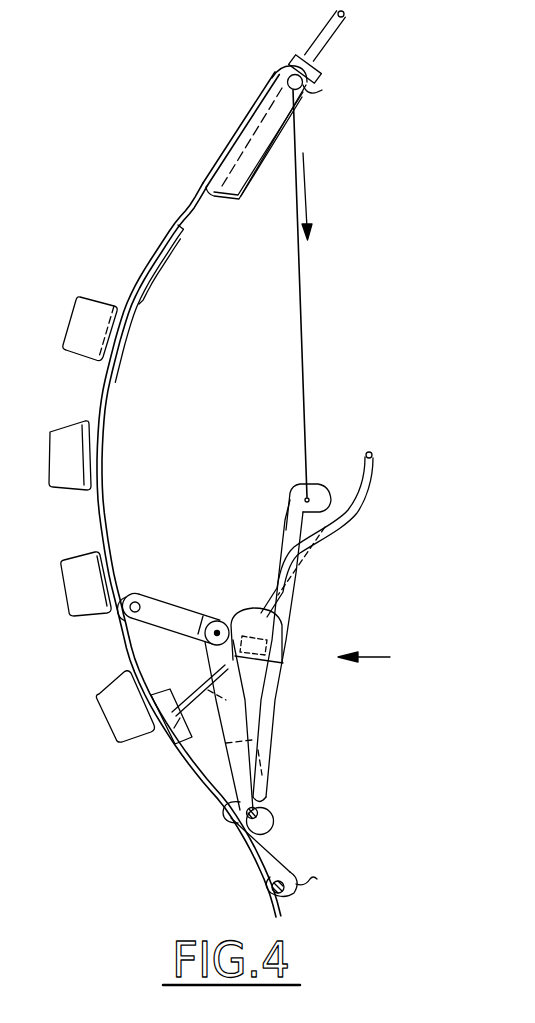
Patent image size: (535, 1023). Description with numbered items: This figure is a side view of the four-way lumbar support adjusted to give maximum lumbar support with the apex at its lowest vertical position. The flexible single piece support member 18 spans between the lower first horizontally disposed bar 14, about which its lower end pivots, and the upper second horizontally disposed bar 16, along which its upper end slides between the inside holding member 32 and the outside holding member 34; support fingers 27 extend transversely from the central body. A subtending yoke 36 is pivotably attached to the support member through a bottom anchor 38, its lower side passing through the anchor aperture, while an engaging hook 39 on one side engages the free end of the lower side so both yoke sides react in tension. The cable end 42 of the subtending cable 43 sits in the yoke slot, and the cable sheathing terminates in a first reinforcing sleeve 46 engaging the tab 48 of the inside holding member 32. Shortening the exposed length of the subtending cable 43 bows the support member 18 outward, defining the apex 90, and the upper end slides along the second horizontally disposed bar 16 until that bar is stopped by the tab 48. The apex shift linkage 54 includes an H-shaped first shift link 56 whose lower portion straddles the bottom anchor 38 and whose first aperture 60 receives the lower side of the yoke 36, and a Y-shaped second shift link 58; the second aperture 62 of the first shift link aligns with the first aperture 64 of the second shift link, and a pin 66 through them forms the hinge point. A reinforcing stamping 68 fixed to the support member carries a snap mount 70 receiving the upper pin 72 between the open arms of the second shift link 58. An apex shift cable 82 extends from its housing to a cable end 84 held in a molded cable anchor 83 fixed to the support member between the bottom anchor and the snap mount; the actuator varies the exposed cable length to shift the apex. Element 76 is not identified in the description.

The first horizontally disposed bar 14 is at (264, 884).
The second horizontally disposed bar 16 is at (312, 92).
The single piece support member 18 is at (335, 510).
The support fingers 27 is at (84, 312).
The inside holding member 32 is at (237, 141).
The outside holding member 34 is at (257, 176).
The subtending yoke 36 is at (292, 600).
The bottom anchor 38 is at (228, 812).
The engaging hook 39 is at (275, 836).
The cable end 42 is at (318, 522).
The subtending cable 43 is at (308, 381).
The first reinforcing sleeve 46 is at (297, 61).
The tab 48 is at (316, 80).
The apex shift linkage 54 is at (382, 665).
The first shift link 56 is at (240, 683).
The second shift link 58 is at (174, 609).
The first aperture 60 is at (260, 804).
The second aperture 62 is at (218, 651).
The first aperture 64 is at (253, 608).
The pin 66 is at (220, 628).
The reinforcing stamping 68 is at (113, 392).
The snap mount 70 is at (126, 597).
The upper pin 72 is at (140, 601).
The slide block 76 is at (295, 640).
The apex shift cable 82 is at (222, 716).
The molded cable anchor 83 is at (178, 742).
The cable end 84 is at (160, 735).
The apex 90 is at (52, 441).